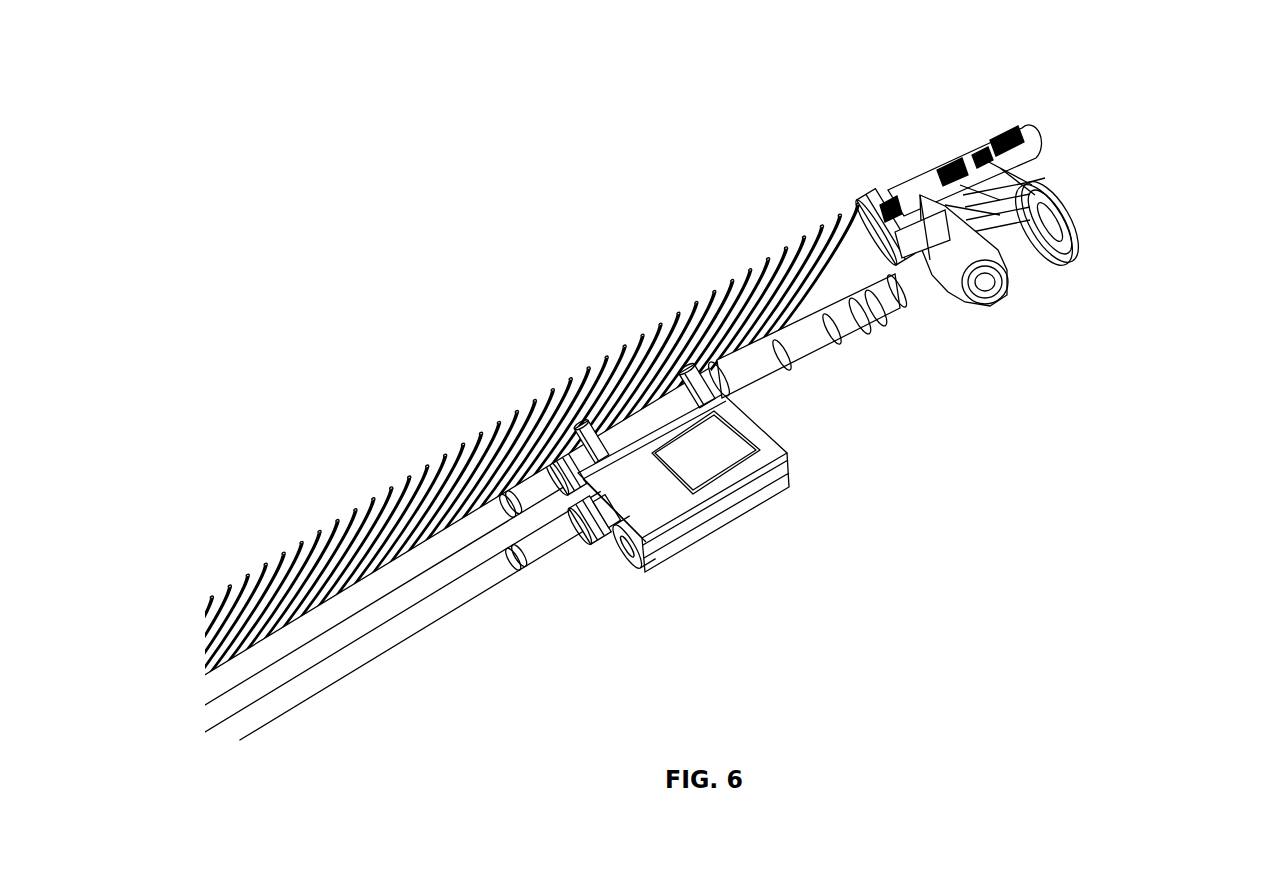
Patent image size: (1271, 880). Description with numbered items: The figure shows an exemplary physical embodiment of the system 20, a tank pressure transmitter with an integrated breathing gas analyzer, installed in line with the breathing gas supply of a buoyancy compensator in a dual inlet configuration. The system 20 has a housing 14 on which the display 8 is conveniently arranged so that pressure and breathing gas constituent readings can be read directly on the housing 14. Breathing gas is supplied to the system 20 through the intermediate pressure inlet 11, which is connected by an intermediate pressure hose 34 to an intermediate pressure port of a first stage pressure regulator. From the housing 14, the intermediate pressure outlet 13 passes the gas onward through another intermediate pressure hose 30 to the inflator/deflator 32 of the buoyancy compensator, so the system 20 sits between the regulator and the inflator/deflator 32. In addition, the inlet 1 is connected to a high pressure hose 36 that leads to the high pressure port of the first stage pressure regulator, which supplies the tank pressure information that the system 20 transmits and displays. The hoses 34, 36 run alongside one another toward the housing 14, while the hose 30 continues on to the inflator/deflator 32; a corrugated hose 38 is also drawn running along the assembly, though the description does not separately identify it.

The inlet 1 is at (586, 500).
The display 8 is at (738, 450).
The intermediate pressure inlet 11 is at (588, 444).
The intermediate pressure outlet 13 is at (698, 383).
The housing 14 is at (706, 498).
The system 20 is at (642, 518).
The intermediate pressure hose 30 is at (806, 358).
The inflator/deflator 32 is at (1028, 271).
The intermediate pressure hose 34 is at (444, 546).
The high pressure hose 36 is at (444, 609).
The corrugated hose 38 is at (270, 607).